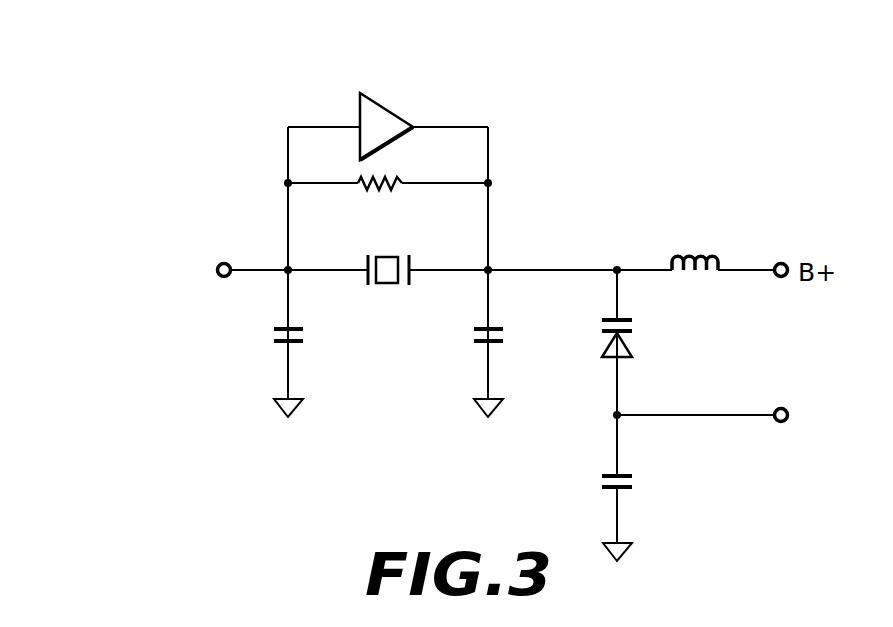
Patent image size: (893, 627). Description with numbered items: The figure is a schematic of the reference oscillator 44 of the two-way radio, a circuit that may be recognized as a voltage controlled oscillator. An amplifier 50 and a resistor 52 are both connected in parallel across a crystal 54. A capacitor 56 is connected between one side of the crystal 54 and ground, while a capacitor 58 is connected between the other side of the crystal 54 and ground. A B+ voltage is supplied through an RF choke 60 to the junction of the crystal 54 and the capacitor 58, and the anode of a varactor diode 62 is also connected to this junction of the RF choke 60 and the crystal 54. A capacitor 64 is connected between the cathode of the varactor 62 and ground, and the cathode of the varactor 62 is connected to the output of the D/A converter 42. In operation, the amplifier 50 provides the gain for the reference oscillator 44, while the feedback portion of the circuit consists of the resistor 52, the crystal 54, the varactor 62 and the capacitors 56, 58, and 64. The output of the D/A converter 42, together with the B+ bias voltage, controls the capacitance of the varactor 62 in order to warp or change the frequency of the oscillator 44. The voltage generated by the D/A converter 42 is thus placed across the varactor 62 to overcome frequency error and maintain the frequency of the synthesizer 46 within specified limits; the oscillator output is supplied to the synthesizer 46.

The D/A converter 42 is at (820, 439).
The reference oscillator 44 is at (689, 90).
The synthesizer 46 is at (133, 267).
The amplifier 50 is at (386, 106).
The resistor 52 is at (391, 188).
The crystal 54 is at (388, 283).
The capacitor 56 is at (295, 343).
The capacitor 58 is at (495, 343).
The RF choke 60 is at (707, 257).
The varactor diode 62 is at (627, 340).
The capacitor 64 is at (624, 490).